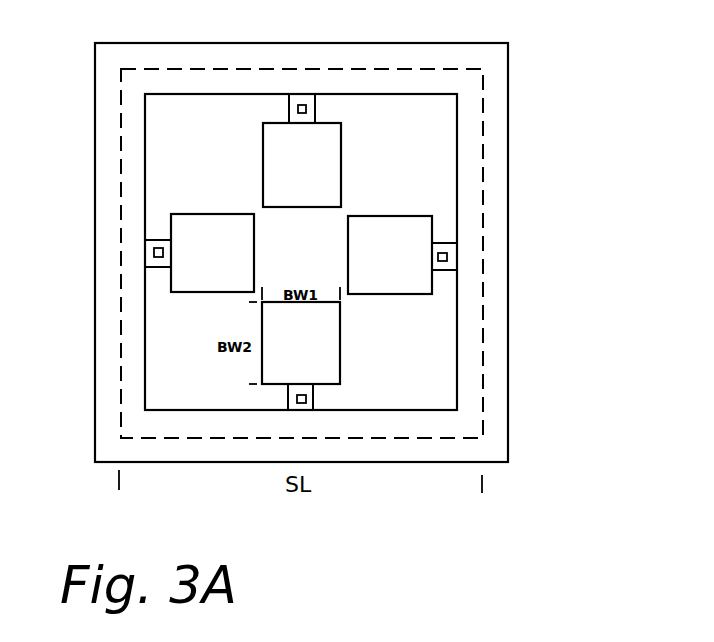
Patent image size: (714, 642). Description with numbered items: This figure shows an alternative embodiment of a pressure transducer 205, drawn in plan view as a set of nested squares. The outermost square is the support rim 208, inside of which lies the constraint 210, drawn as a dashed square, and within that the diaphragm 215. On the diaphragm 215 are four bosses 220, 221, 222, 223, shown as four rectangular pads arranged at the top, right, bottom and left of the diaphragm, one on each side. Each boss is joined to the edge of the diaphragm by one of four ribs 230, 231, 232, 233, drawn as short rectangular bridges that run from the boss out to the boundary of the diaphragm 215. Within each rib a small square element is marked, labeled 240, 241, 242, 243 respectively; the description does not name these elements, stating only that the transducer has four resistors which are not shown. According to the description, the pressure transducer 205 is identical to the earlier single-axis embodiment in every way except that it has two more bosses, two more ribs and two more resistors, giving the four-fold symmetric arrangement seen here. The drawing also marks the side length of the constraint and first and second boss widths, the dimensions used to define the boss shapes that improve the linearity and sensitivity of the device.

The pressure transducer 205 is at (610, 54).
The support rim 208 is at (497, 420).
The constraint 210 is at (468, 364).
The diaphragm 215 is at (440, 139).
The boss 220 is at (342, 168).
The boss 221 is at (371, 216).
The boss 222 is at (341, 345).
The boss 223 is at (228, 293).
The rib 230 is at (316, 108).
The rib 231 is at (443, 270).
The rib 232 is at (313, 397).
The rib 233 is at (160, 240).
The via 240 is at (302, 104).
The via 241 is at (448, 257).
The via 242 is at (288, 398).
The via 243 is at (153, 252).